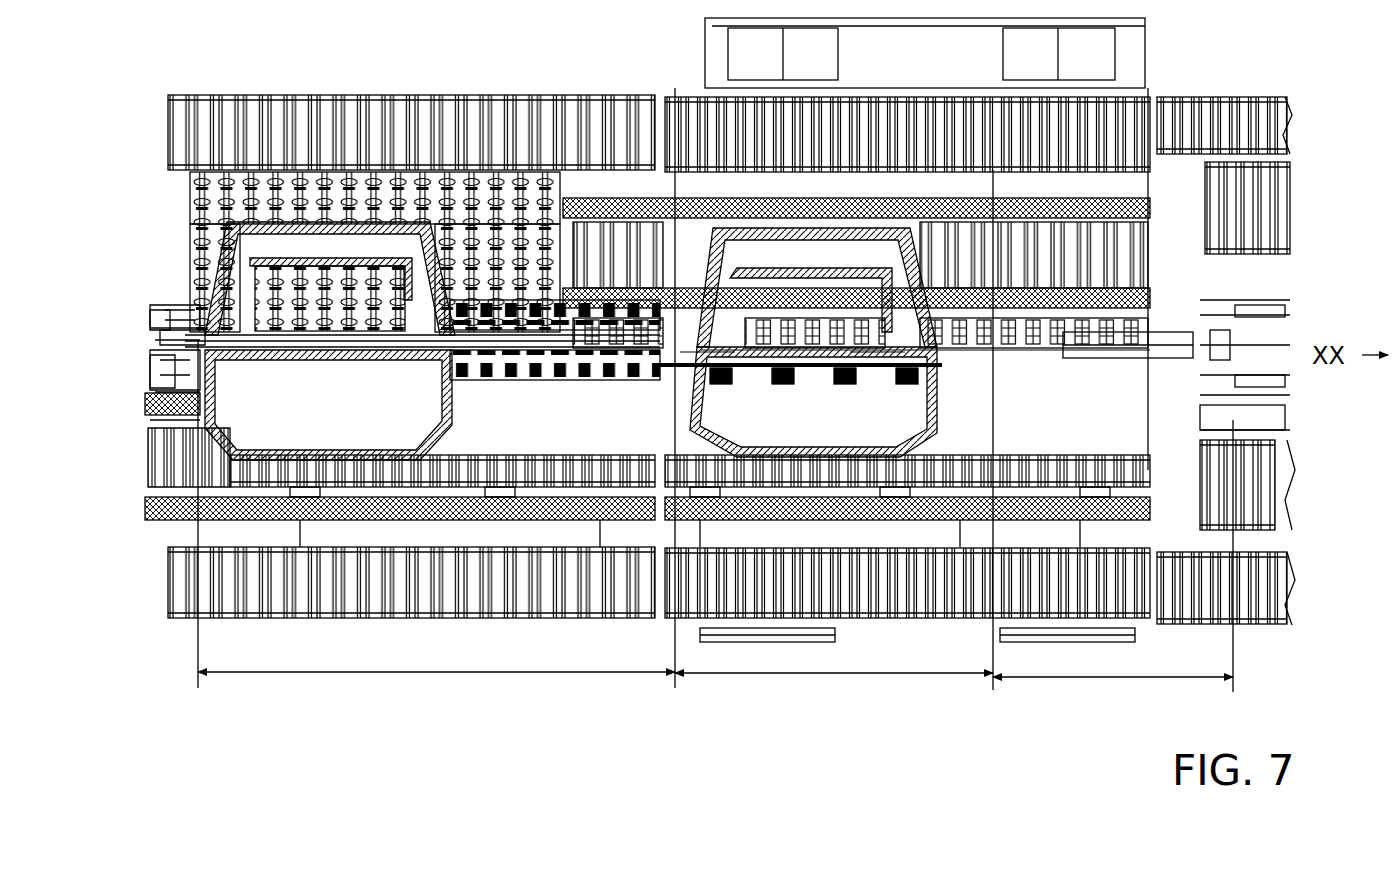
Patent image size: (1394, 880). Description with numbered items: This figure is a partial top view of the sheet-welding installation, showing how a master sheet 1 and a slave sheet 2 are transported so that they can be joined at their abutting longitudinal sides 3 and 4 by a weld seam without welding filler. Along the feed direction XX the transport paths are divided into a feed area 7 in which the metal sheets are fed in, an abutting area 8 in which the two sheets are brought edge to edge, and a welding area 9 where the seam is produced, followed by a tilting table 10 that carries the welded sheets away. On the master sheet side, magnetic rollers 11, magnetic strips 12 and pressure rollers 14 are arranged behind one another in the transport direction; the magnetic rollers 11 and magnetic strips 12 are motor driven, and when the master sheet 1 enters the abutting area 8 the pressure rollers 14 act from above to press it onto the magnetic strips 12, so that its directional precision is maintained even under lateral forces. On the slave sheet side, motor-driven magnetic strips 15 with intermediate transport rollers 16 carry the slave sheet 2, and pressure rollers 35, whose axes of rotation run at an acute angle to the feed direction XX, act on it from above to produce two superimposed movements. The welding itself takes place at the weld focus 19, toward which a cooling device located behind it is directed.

The master sheet 1 is at (313, 240).
The slave sheet 2 is at (388, 440).
The abutting longitudinal side of master sheet 3 is at (398, 306).
The abutting longitudinal side of slave sheet 4 is at (392, 354).
The feed area 7 is at (436, 654).
The abutting area 8 is at (834, 657).
The welding area 9 is at (1113, 660).
The tilting table 10 is at (1282, 480).
The magnetic rollers 11 is at (240, 172).
The magnetic strips 12 is at (927, 280).
The pressure rollers 14 is at (760, 378).
The magnetic strips 15 is at (150, 505).
The intermediate transport rollers 16 is at (628, 452).
The weld focus 19 is at (1210, 282).
The pressure rollers 35 is at (798, 372).